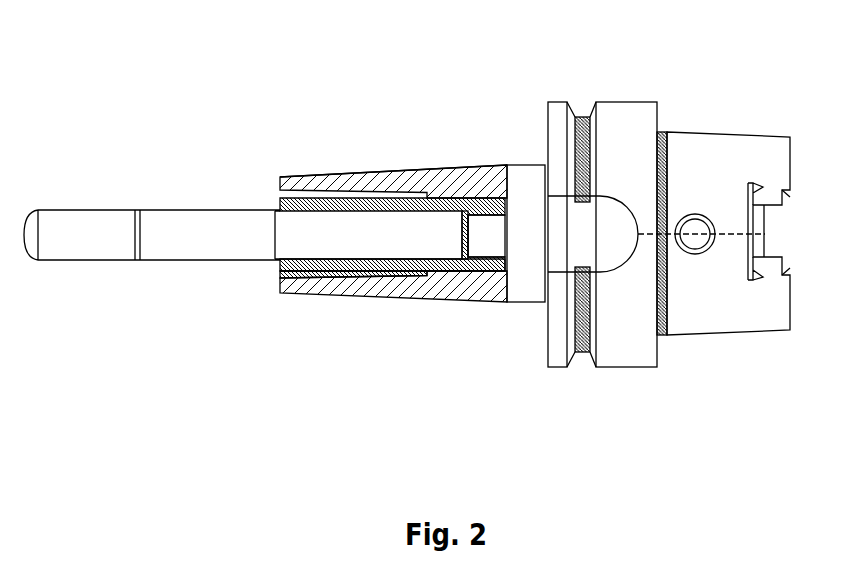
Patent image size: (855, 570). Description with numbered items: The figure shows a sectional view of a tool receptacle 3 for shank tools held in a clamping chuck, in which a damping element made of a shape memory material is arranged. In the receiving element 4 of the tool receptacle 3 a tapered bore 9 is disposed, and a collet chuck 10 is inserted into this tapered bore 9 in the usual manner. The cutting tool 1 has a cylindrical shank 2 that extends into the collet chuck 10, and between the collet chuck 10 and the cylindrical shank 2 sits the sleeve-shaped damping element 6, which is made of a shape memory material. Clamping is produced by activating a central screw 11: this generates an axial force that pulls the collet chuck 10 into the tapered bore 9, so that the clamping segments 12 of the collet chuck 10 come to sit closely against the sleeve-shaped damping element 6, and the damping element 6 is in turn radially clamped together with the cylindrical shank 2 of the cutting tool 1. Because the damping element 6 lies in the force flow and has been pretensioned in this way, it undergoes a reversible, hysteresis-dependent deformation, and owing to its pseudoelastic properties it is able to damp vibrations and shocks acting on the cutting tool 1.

The cutting tool 1 is at (80, 237).
The cylindrical shank 2 is at (295, 237).
The tool receptacle 3 is at (627, 115).
The receiving element 4 is at (370, 167).
The sleeve-shaped damping element 6 is at (358, 302).
The tapered bore 9 is at (418, 168).
The collet chuck 10 is at (410, 302).
The central screw 11 is at (498, 234).
The clamping segments 12 is at (295, 294).